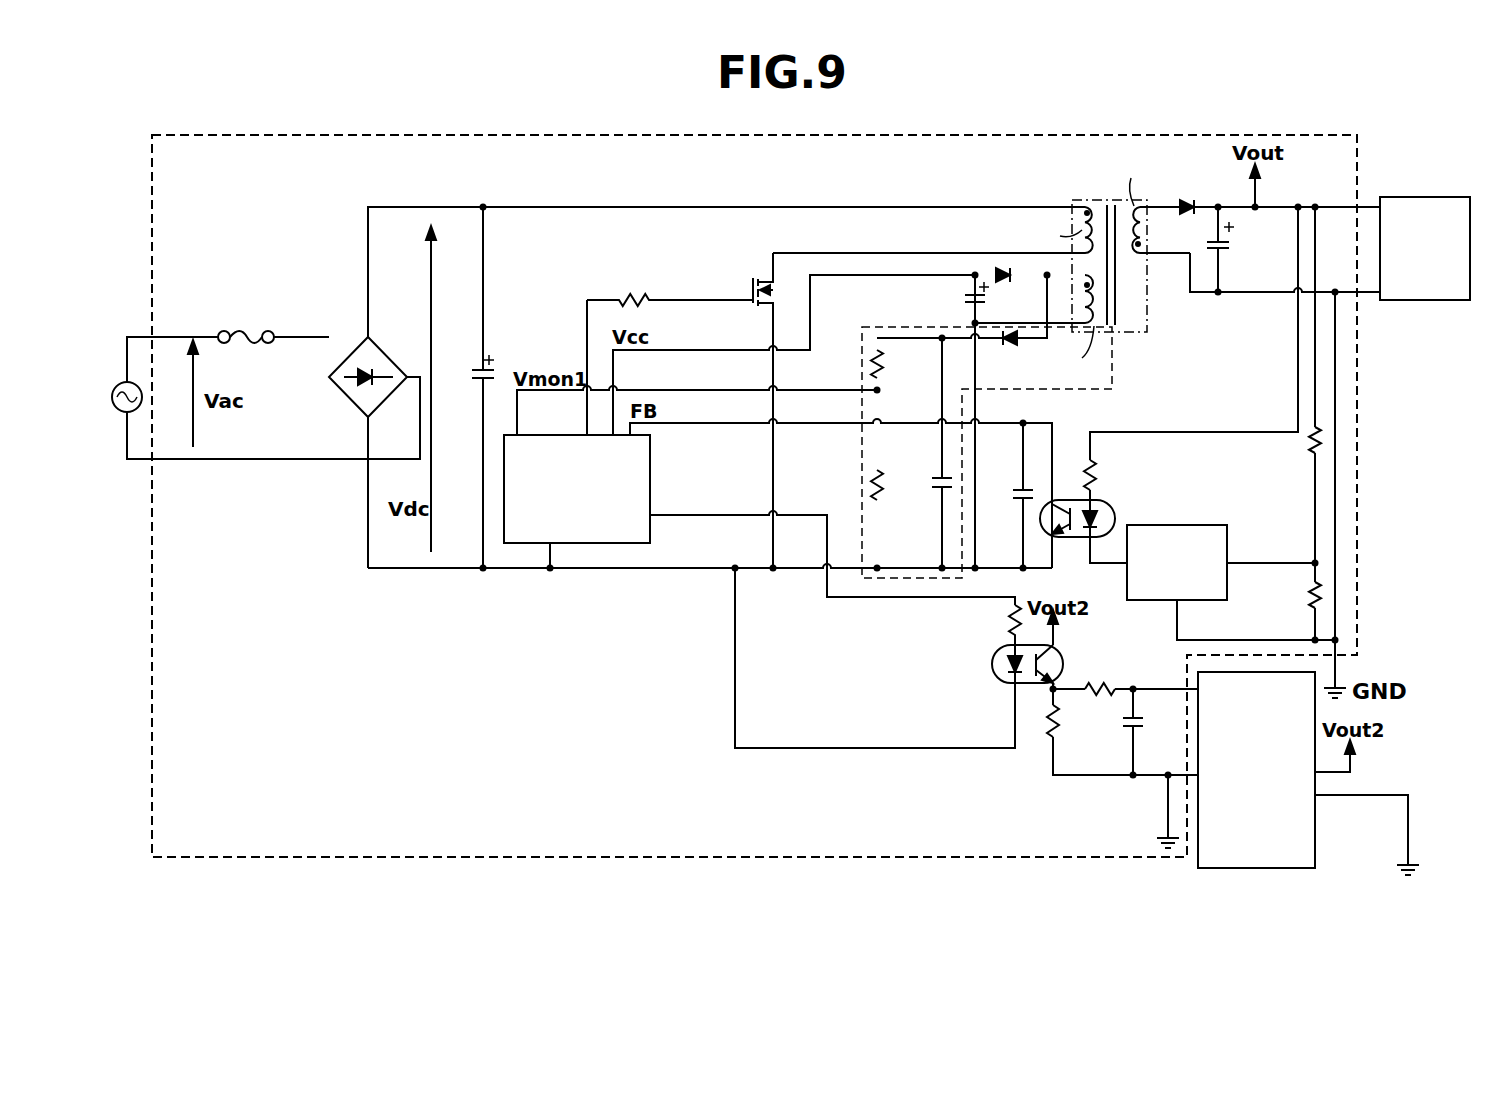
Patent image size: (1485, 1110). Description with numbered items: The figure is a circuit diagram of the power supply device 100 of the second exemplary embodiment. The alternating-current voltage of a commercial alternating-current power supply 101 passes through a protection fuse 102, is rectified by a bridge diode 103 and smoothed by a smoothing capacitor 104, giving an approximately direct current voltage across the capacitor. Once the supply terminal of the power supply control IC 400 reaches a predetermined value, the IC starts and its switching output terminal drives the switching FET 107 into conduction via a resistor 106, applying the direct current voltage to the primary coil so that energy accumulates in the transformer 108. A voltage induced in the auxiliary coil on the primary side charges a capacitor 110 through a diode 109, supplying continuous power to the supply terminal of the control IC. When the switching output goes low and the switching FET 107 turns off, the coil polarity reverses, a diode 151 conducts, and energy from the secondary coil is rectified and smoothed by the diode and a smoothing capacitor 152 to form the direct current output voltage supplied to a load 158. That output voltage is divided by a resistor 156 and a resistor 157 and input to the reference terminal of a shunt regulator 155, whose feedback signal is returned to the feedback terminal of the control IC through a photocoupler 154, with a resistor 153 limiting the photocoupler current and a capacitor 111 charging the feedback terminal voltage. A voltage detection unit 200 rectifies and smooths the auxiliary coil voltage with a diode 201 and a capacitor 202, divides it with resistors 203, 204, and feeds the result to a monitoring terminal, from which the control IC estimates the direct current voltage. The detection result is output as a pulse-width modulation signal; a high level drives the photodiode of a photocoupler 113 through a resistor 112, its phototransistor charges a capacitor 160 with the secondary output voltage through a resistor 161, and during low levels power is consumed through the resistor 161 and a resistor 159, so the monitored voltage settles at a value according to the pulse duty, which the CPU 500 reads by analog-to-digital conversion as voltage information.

The power supply device 100 is at (288, 135).
The commercial alternating-current power supply 101 is at (118, 380).
The fuse 102 is at (246, 330).
The bridge diode 103 is at (343, 352).
The smoothing capacitor 104 is at (476, 368).
The resistor 106 is at (634, 296).
The switching FET 107 is at (761, 276).
The transformer 108 is at (1081, 202).
The diode 109 is at (995, 270).
The capacitor 110 is at (962, 298).
The capacitor 111 is at (1014, 490).
The resistor 112 is at (1010, 623).
The photocoupler 113 is at (992, 663).
The diode 151 is at (1185, 200).
The smoothing capacitor 152 is at (1232, 245).
The resistor 153 is at (1096, 470).
The photocoupler 154 is at (1104, 502).
The shunt regulator 155 is at (1211, 525).
The resistor 156 is at (1310, 451).
The resistor 157 is at (1313, 599).
The load 158 is at (1426, 197).
The resistor 159 is at (1058, 716).
The capacitor 160 is at (1144, 724).
The resistor 161 is at (1098, 684).
The voltage detection unit 200 is at (862, 378).
The diode 201 is at (1012, 348).
The capacitor 202 is at (936, 490).
The resistor 203 is at (883, 350).
The resistor 204 is at (883, 480).
The power supply control IC 400 is at (652, 478).
The CPU 500 is at (1317, 829).